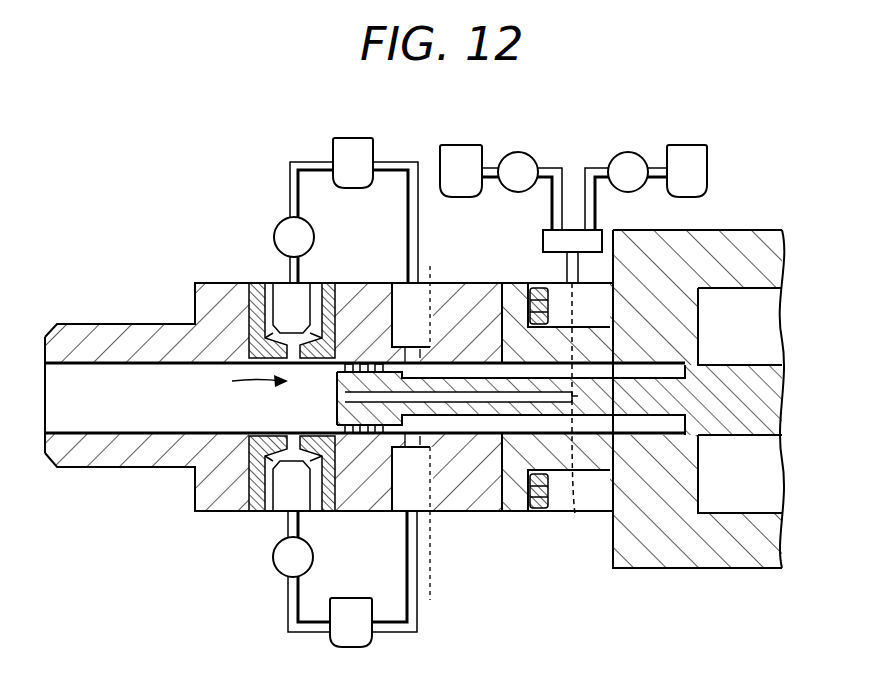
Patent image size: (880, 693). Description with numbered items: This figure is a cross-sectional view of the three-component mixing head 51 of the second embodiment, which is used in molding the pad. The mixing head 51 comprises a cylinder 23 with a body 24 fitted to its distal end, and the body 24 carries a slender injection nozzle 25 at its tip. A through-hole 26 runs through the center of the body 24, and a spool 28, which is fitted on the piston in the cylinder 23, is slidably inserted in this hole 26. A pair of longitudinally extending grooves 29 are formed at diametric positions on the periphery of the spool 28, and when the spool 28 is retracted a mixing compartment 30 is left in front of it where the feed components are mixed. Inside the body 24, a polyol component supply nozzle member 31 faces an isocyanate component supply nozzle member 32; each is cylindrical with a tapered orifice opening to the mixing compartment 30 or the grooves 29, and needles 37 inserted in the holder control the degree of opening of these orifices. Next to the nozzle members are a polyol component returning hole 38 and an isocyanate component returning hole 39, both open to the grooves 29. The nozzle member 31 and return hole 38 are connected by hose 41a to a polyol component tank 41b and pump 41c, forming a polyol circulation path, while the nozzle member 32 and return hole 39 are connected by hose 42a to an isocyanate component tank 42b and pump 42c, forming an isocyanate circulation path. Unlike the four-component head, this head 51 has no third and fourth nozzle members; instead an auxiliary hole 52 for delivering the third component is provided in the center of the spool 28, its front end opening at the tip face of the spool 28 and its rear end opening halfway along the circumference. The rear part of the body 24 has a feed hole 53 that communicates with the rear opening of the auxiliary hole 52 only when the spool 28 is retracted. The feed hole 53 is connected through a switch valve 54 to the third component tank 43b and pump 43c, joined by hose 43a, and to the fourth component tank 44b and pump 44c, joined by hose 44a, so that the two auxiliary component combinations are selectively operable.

The cylinder 23 is at (738, 242).
The body 24 is at (207, 508).
The injection nozzle 25 is at (89, 330).
The through-hole 26 is at (104, 442).
The spool 28 is at (455, 418).
The elongated grooves 29 is at (480, 418).
The mixing compartment 30 is at (241, 384).
The polyol component supply nozzle member 31 is at (258, 292).
The isocyanate component supply nozzle member 32 is at (256, 508).
The needles 37 is at (300, 288).
The polyol component returning hole 38 is at (424, 302).
The isocyanate component returning hole 39 is at (427, 529).
The hose 41a is at (290, 178).
The polyol component tank 41b is at (342, 150).
The pump 41c is at (313, 224).
The hose 42a is at (288, 621).
The isocyanate component tank 42b is at (373, 636).
The pump 42c is at (314, 556).
The hose 43a is at (549, 200).
The third component tank 43b is at (462, 152).
The pump 43c is at (519, 152).
The hose 44a is at (597, 203).
The fourth component tank 44b is at (707, 157).
The pump 44c is at (627, 152).
The three-component mixing head 51 is at (196, 268).
The auxiliary hole 52 is at (345, 394).
The feed hole 53 is at (579, 416).
The switch valve 54 is at (543, 242).